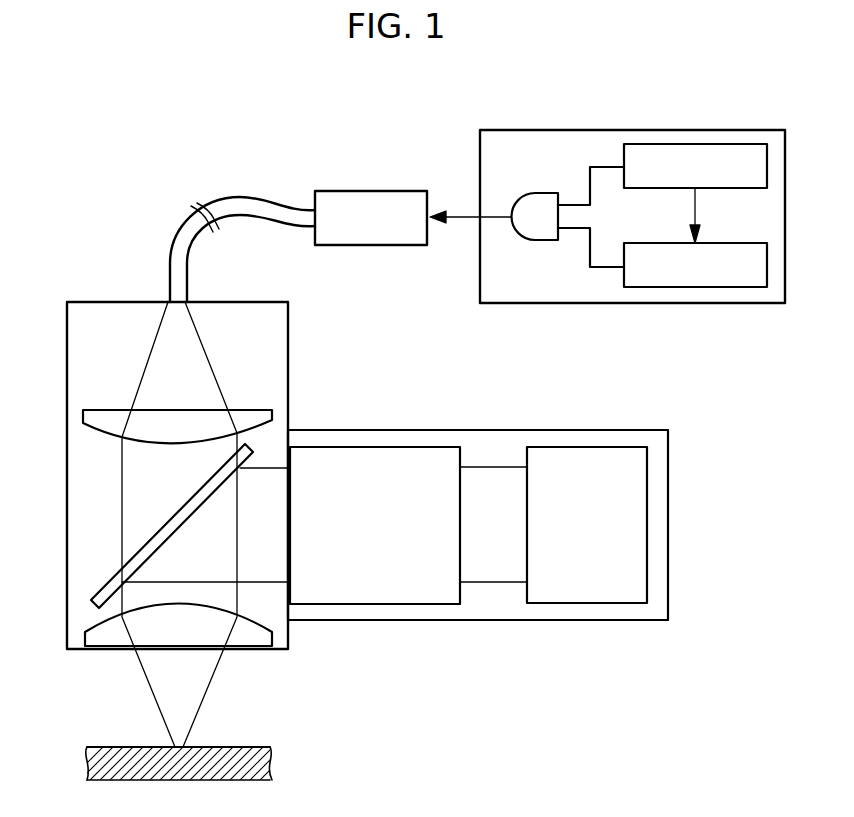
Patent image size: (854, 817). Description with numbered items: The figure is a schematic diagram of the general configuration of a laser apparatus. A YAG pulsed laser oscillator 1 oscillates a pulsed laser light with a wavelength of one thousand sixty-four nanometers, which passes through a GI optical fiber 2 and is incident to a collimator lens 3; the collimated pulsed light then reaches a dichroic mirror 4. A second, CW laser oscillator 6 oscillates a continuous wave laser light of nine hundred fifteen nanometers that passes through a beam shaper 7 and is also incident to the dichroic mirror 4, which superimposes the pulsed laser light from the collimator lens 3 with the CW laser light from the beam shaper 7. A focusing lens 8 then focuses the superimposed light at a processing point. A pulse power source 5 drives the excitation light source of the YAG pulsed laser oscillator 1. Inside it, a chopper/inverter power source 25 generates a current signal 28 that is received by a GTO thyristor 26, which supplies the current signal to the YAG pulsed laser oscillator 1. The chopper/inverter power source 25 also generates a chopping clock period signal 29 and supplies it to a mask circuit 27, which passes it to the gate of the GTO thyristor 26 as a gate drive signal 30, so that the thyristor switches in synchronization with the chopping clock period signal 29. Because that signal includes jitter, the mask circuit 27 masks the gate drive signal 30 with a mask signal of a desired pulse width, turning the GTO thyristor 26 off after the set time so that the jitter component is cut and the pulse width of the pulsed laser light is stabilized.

The YAG pulsed laser oscillator 1 is at (375, 195).
The GI optical fiber 2 is at (240, 200).
The collimator lens 3 is at (88, 418).
The dichroic mirror 4 is at (140, 552).
The pulse power source 5 is at (570, 130).
The CW laser oscillator 6 is at (552, 447).
The beam shaper 7 is at (385, 447).
The focusing lens 8 is at (98, 640).
The chopper/inverter power source 25 is at (682, 155).
The GTO thyristor 26 is at (531, 205).
The mask circuit 27 is at (690, 278).
The current signal 28 is at (600, 167).
The chopping clock period signal 29 is at (703, 210).
The gate drive signal 30 is at (604, 268).